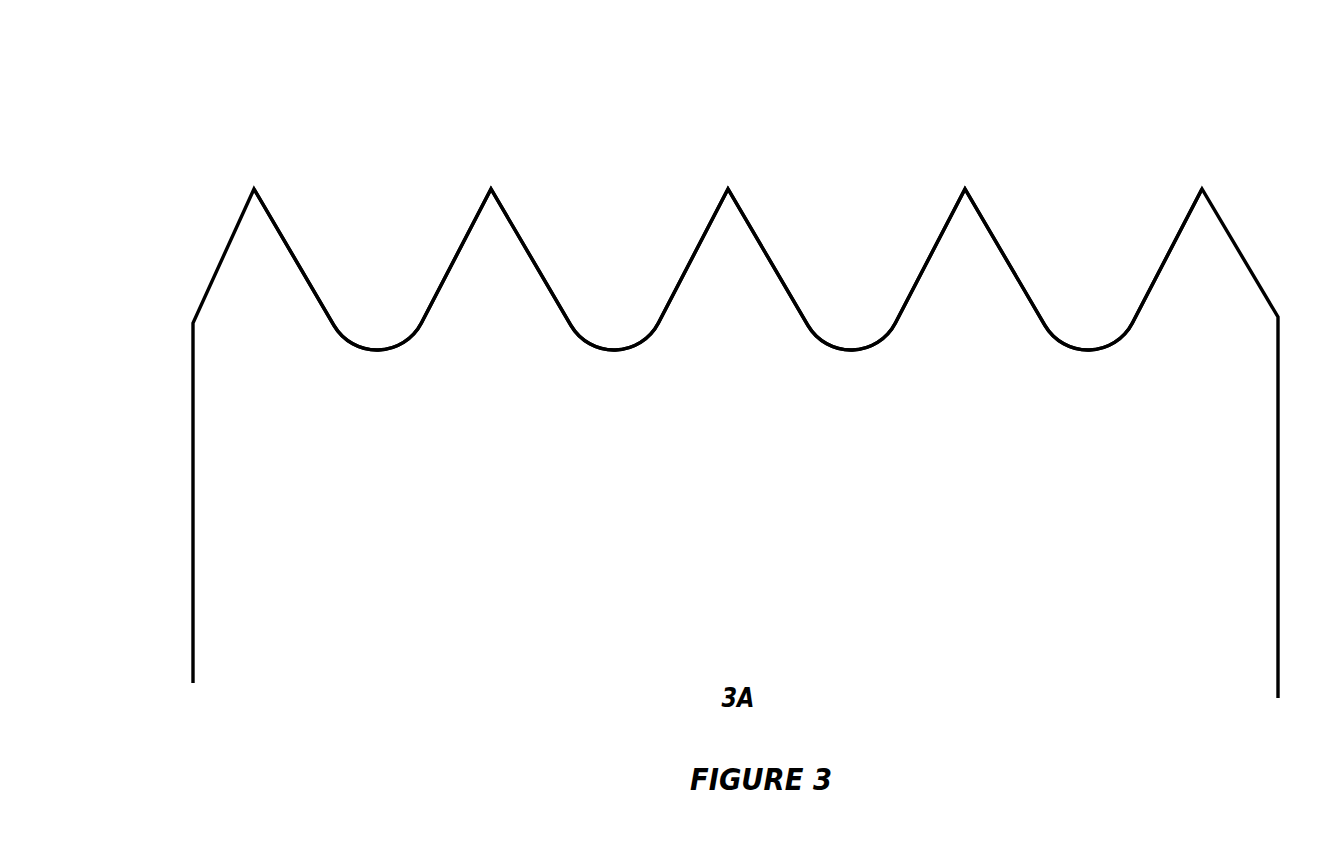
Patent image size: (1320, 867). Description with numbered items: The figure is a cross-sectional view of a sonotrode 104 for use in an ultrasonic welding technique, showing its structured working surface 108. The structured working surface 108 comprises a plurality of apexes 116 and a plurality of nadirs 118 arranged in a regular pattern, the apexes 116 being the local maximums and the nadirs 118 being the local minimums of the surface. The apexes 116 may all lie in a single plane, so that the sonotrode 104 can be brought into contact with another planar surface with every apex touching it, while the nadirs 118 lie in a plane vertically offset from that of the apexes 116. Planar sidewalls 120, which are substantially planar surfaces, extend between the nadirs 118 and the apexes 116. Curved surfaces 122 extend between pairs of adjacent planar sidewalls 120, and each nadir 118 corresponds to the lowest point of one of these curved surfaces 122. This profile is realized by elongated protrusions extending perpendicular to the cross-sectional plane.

The sonotrode 104 is at (709, 601).
The structured working surface 108 is at (358, 100).
The apexes 116 is at (491, 188).
The nadirs 118 is at (612, 351).
The planar sidewalls 120 is at (538, 270).
The curved surfaces 122 is at (642, 342).